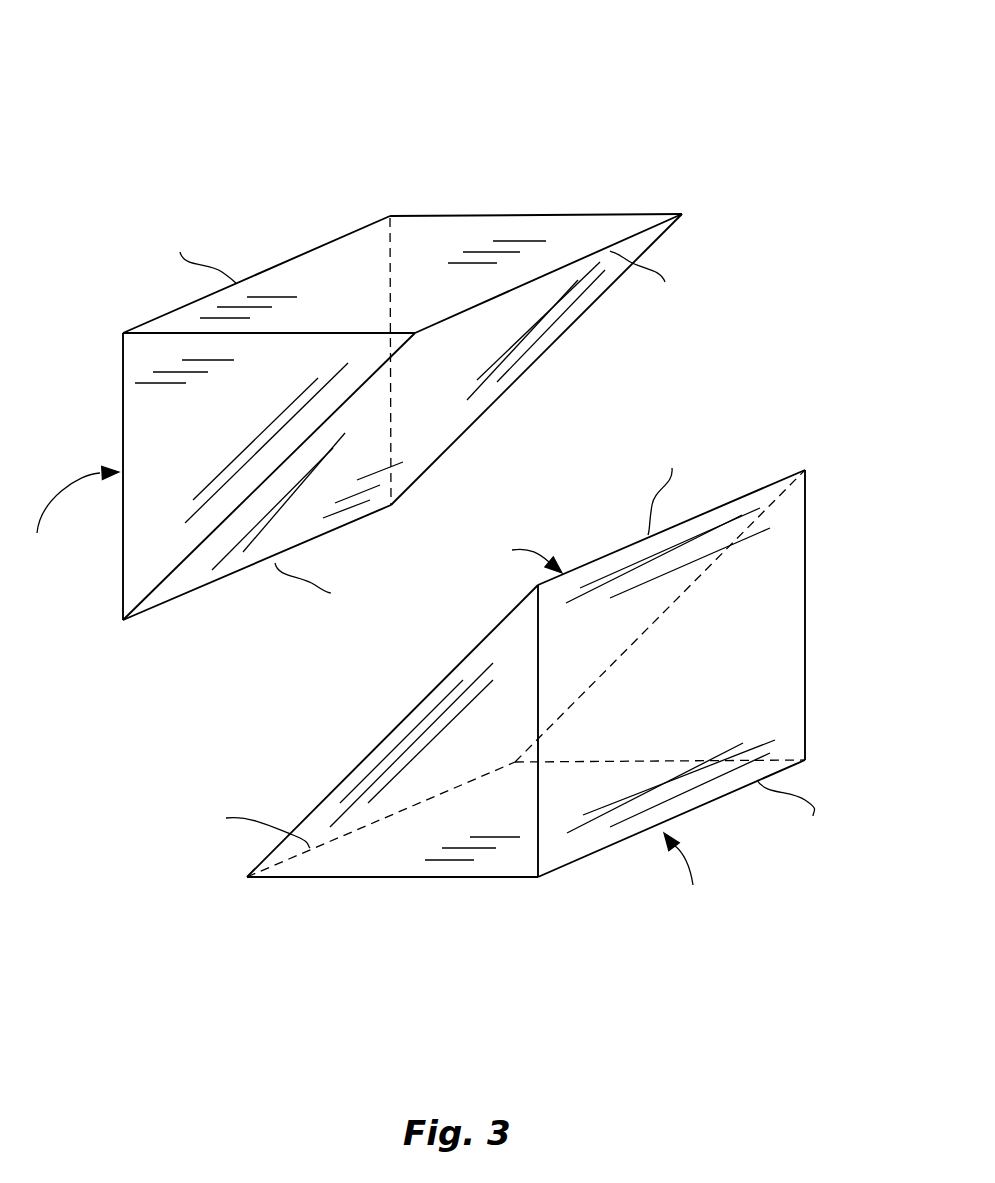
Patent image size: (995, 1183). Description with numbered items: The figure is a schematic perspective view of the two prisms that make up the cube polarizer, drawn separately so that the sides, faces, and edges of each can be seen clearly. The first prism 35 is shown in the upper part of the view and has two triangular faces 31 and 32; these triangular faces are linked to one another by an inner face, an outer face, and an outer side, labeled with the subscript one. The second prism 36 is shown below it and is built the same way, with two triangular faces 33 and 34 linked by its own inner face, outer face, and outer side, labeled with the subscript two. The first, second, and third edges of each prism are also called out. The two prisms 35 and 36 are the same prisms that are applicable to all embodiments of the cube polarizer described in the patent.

The triangular face 31 is at (198, 440).
The triangular face 32 is at (593, 207).
The triangular face 33 is at (476, 782).
The triangular face 34 is at (818, 585).
The first prism 35 is at (205, 100).
The second prism 36 is at (641, 990).